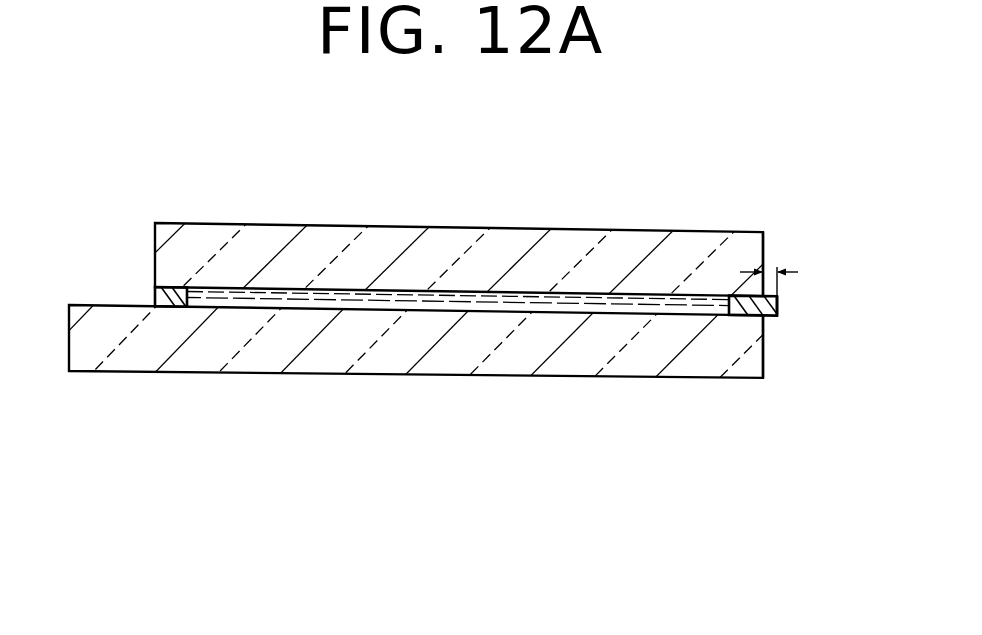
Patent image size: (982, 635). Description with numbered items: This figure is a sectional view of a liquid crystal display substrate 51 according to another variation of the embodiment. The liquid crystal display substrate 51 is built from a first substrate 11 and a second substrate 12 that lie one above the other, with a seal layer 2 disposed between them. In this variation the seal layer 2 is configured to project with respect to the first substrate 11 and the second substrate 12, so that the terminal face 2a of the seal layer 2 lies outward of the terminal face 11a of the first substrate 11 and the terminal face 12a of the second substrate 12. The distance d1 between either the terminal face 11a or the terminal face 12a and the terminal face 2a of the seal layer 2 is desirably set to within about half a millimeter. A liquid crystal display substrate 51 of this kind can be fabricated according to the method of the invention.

The liquid crystal display substrate 51 is at (295, 210).
The second substrate 12 is at (447, 244).
The first substrate 11 is at (330, 357).
The seal layer 2 is at (155, 293).
The terminal face of the seal layer 2a is at (780, 303).
The terminal face of the first substrate 11a is at (764, 355).
The terminal face of the second substrate 12a is at (765, 248).
The distance d1 is at (773, 267).